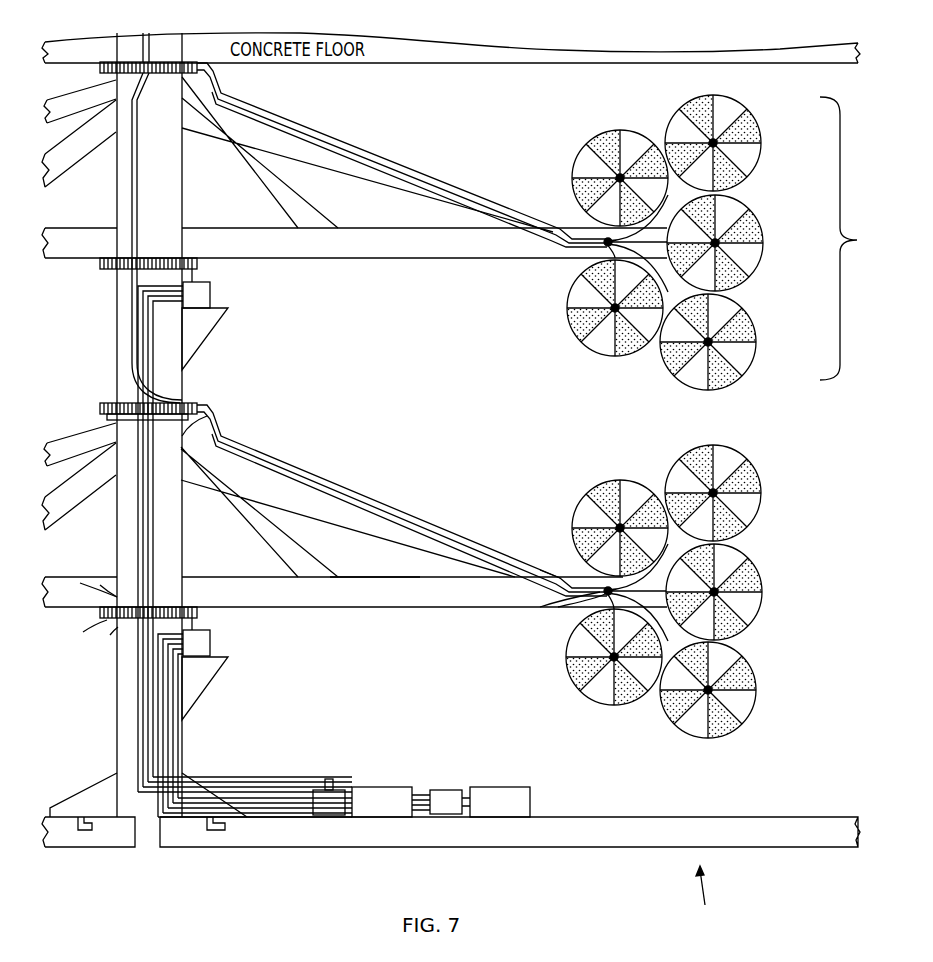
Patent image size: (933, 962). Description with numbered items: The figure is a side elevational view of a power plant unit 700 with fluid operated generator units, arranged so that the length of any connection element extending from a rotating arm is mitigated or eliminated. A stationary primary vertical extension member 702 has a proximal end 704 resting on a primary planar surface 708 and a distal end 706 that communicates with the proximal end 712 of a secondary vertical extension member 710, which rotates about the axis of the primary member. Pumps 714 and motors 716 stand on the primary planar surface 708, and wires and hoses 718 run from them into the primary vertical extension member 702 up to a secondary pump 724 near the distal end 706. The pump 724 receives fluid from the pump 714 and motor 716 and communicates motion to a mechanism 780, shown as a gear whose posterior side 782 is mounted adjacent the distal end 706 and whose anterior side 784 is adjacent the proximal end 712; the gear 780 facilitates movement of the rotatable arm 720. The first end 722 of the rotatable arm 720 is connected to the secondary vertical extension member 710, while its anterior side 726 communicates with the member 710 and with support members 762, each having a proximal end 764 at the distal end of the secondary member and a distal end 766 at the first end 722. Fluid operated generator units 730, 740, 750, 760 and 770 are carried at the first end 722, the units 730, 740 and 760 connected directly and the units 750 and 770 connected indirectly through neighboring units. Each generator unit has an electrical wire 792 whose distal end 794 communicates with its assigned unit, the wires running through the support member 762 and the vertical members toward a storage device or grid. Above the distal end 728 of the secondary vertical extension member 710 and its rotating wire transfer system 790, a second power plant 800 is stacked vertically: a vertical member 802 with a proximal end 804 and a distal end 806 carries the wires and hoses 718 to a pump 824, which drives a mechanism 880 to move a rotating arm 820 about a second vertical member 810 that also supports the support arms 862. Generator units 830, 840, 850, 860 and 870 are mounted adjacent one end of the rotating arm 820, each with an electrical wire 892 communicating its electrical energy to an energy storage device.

The power plant unit 700 is at (714, 899).
The primary vertical extension member 702 is at (117, 702).
The proximal end 704 is at (137, 818).
The distal end 706 is at (110, 635).
The primary planar surface 708 is at (583, 823).
The secondary vertical extension member 710 is at (127, 517).
The proximal end 712 is at (100, 585).
The pump 714 is at (326, 782).
The motor 716 is at (377, 787).
The wires and hoses 718 is at (230, 800).
The rotatable arm 720 is at (348, 595).
The first end 722 is at (520, 607).
The secondary pump 724 is at (203, 637).
The anterior side 726 is at (375, 577).
The distal end 728 is at (100, 408).
The fluid operated generator unit 730 is at (598, 695).
The fluid operated generator unit 740 is at (628, 487).
The fluid operated generator unit 750 is at (693, 458).
The fluid operated generator unit 760 is at (750, 605).
The support member 762 is at (72, 440).
The proximal end 764 is at (200, 413).
The distal end 766 is at (550, 575).
The fluid operated generator unit 770 is at (750, 702).
The mechanism 780 is at (100, 613).
The posterior side 782 is at (83, 632).
The anterior side 784 is at (80, 583).
The rotating wire transfer system 790 is at (100, 68).
The electrical wire 792 is at (362, 505).
The distal end 794 is at (553, 609).
The second power plant 800 is at (859, 238).
The vertical member 802 is at (117, 330).
The proximal end 804 is at (175, 392).
The distal end 806 is at (123, 277).
The second vertical member 810 is at (180, 195).
The rotating arm 820 is at (405, 252).
The pump 824 is at (208, 292).
The generator unit 830 is at (600, 345).
The generator unit 840 is at (628, 135).
The generator unit 850 is at (752, 127).
The generator unit 860 is at (752, 253).
The support arm 862 is at (318, 130).
The generator unit 870 is at (748, 353).
The mechanism 880 is at (197, 263).
The electrical wire 892 is at (363, 160).